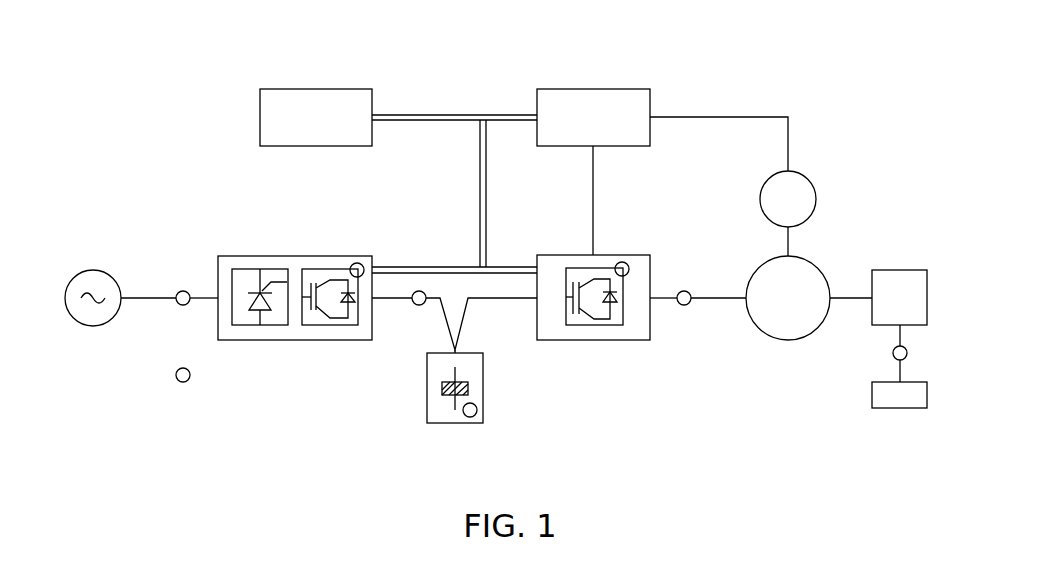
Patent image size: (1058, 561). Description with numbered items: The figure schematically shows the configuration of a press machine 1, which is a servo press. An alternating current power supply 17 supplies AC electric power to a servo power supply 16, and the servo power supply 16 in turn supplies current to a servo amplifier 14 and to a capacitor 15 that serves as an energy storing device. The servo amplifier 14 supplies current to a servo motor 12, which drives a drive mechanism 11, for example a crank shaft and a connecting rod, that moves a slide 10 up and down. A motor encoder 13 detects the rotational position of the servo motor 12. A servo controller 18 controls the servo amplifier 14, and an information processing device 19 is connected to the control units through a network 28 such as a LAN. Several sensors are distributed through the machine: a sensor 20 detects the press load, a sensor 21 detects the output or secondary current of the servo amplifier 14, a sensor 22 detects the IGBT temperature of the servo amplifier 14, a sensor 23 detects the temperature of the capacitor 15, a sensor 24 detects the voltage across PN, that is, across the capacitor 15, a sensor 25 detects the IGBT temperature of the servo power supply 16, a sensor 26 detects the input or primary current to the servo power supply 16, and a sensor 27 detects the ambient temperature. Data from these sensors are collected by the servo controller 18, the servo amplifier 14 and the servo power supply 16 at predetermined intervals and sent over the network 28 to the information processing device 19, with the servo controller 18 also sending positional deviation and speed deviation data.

The press machine 1 is at (902, 45).
The slide 10 is at (905, 408).
The drive mechanism 11 is at (905, 270).
The servo motor 12 is at (785, 341).
The motor encoder 13 is at (816, 190).
The servo amplifier 14 is at (596, 340).
The capacitor 15 is at (455, 423).
The servo power supply 16 is at (298, 340).
The alternating current power supply 17 is at (95, 325).
The servo controller 18 is at (598, 89).
The information processing device 19 is at (320, 89).
The sensor 20 is at (893, 355).
The sensor 21 is at (686, 290).
The sensor 22 is at (622, 262).
The sensor 23 is at (477, 410).
The sensor 24 is at (421, 290).
The sensor 25 is at (358, 262).
The sensor 26 is at (185, 290).
The sensor 27 is at (186, 382).
The network 28 is at (428, 108).